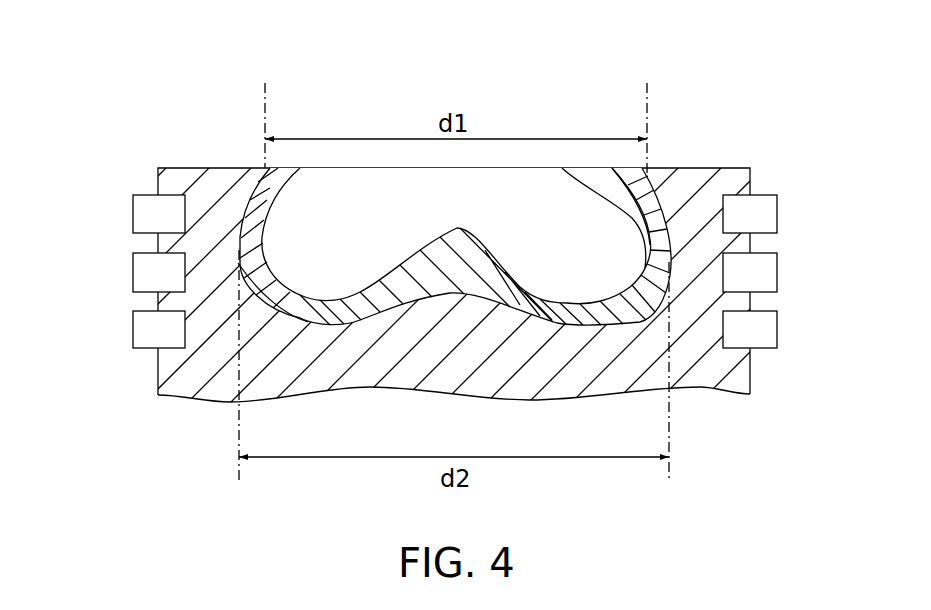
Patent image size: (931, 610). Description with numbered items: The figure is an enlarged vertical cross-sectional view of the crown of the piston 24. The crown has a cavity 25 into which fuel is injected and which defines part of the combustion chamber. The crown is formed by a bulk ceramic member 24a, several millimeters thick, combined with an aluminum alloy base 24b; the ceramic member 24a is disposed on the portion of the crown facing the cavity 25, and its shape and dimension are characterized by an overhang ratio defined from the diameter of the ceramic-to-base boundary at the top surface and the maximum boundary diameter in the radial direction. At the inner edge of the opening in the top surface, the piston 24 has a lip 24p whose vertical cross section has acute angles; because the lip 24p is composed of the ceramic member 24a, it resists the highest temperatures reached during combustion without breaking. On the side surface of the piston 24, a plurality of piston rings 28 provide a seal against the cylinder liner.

The piston 24 is at (150, 115).
The ceramic member 24a is at (575, 180).
The aluminum alloy base 24b is at (708, 377).
The lip 24p is at (303, 181).
The cavity 25 is at (577, 255).
The piston rings 28 is at (167, 330).